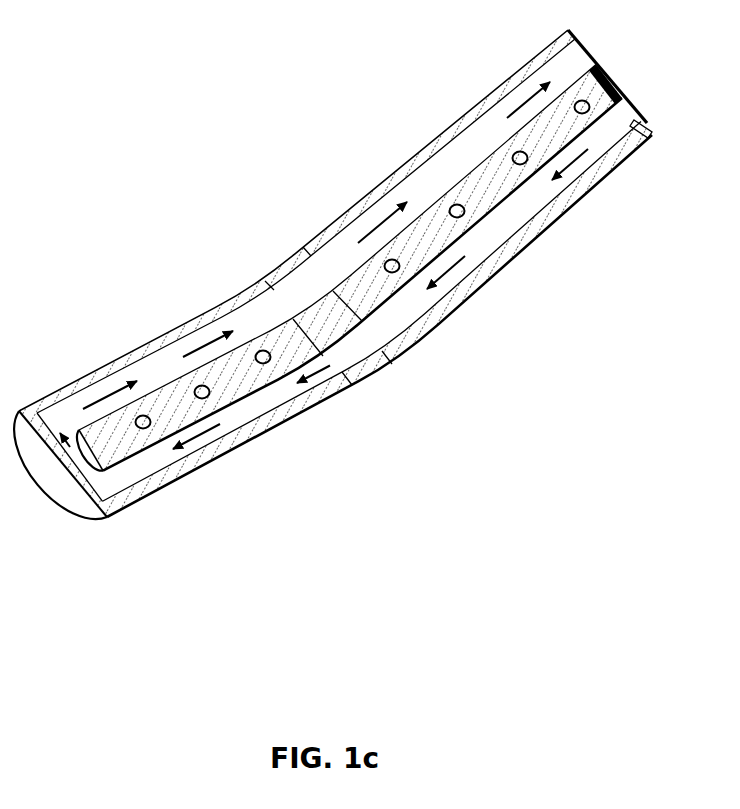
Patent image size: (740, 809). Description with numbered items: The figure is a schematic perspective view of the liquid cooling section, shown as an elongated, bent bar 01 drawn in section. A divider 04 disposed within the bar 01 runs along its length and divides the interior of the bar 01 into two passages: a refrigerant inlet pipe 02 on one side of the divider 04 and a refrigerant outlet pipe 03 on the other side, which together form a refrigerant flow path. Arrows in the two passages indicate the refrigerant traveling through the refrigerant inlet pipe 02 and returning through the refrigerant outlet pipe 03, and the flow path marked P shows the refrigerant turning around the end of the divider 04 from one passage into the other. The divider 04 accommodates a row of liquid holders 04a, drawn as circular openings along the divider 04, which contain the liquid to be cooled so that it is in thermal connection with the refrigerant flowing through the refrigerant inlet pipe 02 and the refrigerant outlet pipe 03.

The bar 01 is at (85, 373).
The refrigerant inlet pipe 02 is at (621, 128).
The refrigerant outlet pipe 03 is at (547, 73).
The divider 04 is at (253, 396).
The liquid holder 04a is at (262, 350).
The flow path P is at (90, 487).